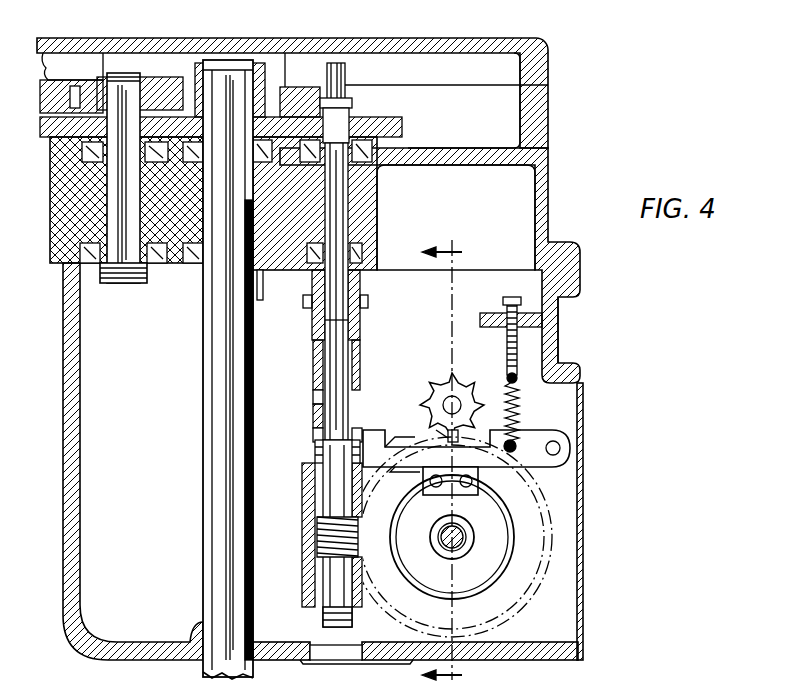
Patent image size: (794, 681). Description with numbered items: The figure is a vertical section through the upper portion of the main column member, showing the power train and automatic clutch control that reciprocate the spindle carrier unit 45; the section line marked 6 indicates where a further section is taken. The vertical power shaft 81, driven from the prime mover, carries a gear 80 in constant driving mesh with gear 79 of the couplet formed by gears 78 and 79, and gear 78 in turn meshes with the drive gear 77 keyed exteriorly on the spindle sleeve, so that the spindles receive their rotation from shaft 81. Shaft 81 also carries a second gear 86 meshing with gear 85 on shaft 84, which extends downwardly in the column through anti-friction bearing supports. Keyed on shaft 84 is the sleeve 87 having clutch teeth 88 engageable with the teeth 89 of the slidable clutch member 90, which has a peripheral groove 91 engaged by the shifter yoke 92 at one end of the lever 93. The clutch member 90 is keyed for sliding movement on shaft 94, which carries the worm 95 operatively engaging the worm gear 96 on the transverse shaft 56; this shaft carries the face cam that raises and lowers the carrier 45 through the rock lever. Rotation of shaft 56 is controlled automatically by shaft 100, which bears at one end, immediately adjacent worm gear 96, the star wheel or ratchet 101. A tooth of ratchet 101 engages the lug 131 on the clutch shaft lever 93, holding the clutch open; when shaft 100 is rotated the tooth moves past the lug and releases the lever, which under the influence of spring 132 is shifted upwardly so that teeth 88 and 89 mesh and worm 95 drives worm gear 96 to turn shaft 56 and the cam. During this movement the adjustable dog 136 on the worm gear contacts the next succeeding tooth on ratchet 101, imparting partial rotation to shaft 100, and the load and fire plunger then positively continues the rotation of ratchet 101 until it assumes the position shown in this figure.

The spindle carrier unit 45 is at (540, 120).
The drive gear 77 is at (52, 145).
The gear 78 is at (56, 104).
The gear 79 is at (85, 100).
The gear 80 is at (300, 84).
The vertical power shaft 81 is at (235, 68).
The shaft 84 is at (345, 82).
The gear 85 is at (380, 117).
The second gear 86 is at (318, 106).
The sleeve 87 is at (355, 337).
The clutch teeth 88 is at (358, 390).
The teeth 89 is at (313, 400).
The slidable clutch member 90 is at (313, 417).
The peripheral groove 91 is at (313, 438).
The shifter yoke 92 is at (396, 420).
The lever 93 is at (568, 418).
The shaft 94 is at (330, 500).
The worm 95 is at (320, 555).
The worm gear 96 is at (535, 592).
The shaft 100 is at (448, 382).
The star wheel or ratchet 101 is at (480, 368).
The lug 131 is at (396, 470).
The spring 132 is at (560, 350).
The adjustable dog 136 is at (480, 485).
The transverse shaft 56 is at (465, 540).
The section line 6 is at (452, 460).